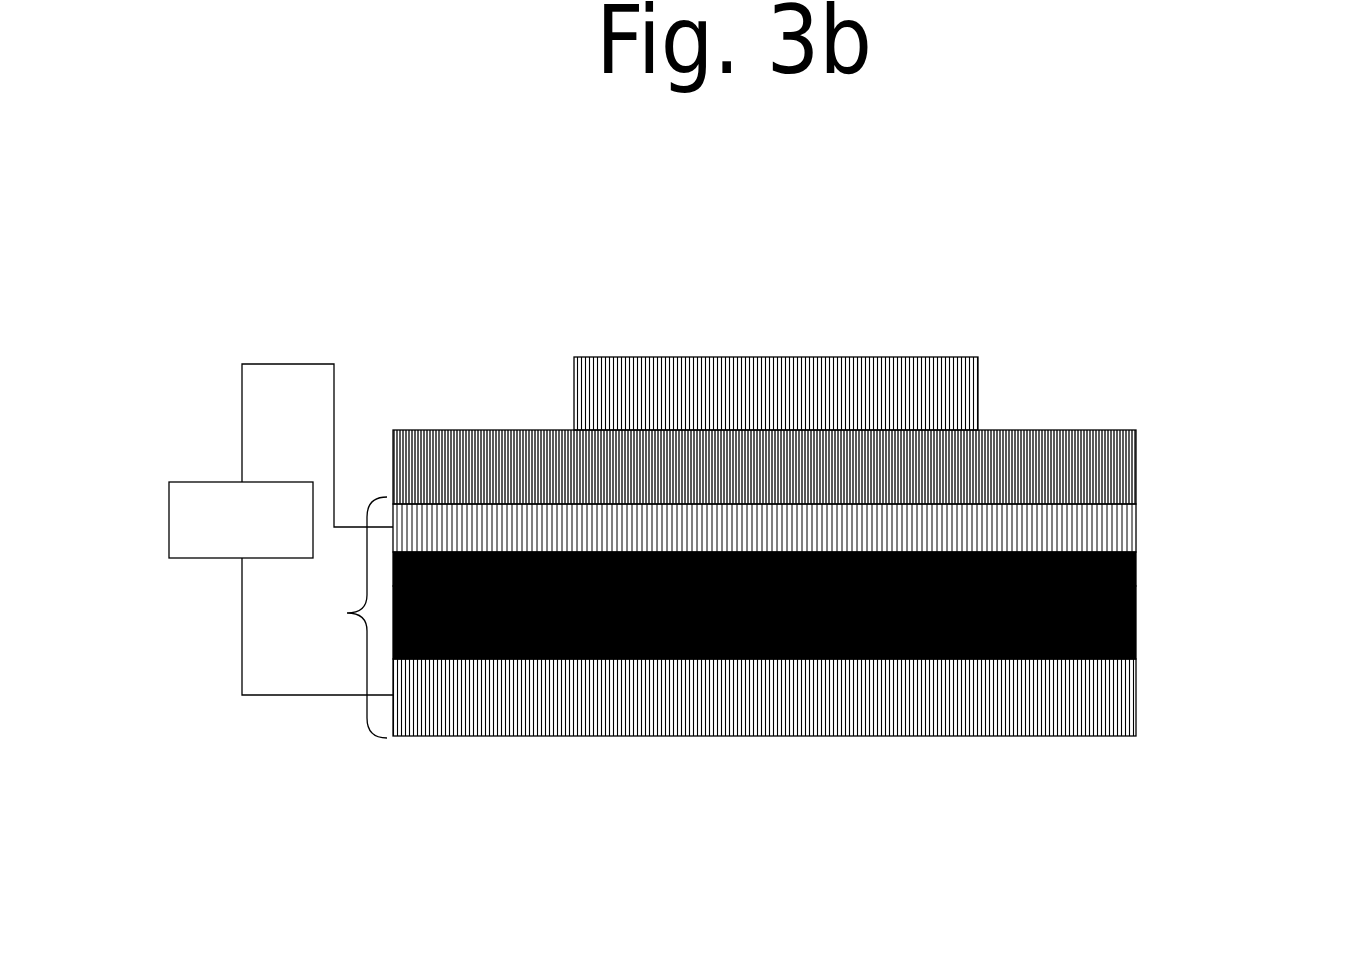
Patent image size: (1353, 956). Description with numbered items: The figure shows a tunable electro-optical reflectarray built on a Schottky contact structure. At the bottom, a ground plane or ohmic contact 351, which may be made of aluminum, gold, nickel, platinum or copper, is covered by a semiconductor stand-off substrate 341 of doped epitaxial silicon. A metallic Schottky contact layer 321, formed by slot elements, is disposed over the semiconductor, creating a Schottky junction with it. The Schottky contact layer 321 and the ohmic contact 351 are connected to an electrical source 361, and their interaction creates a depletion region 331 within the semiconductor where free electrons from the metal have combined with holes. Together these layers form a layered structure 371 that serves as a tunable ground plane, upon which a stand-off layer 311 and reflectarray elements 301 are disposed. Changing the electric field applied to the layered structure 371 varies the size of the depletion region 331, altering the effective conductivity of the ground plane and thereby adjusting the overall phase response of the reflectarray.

The reflectarray elements 301 is at (877, 356).
The stand-off layer 311 is at (837, 426).
The Schottky contact layer 321 is at (866, 493).
The depletion region 331 is at (866, 545).
The semiconductor stand-off substrate 341 is at (866, 610).
The ground plane or ohmic contact 351 is at (866, 681).
The electrical source 361 is at (239, 529).
The layered structure 371 is at (268, 630).